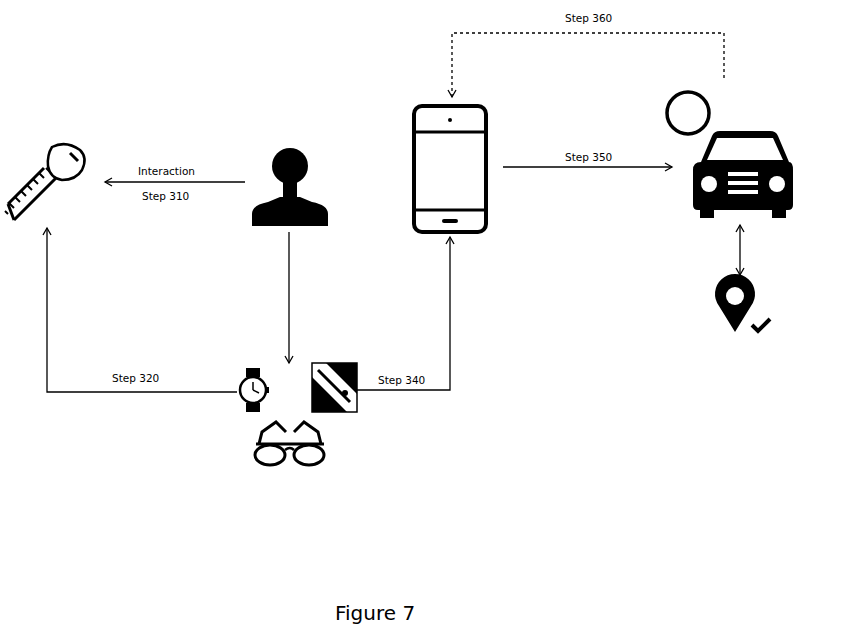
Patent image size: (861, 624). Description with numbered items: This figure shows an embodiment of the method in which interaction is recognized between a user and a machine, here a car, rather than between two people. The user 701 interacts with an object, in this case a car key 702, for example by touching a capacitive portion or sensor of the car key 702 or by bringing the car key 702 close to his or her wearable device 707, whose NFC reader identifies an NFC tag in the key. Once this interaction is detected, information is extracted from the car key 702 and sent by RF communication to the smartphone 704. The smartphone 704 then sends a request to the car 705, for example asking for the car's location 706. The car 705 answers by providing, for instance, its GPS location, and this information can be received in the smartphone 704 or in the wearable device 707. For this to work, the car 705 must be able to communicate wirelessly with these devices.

The user 701 is at (298, 128).
The car key 702 is at (73, 130).
The smartphone 704 is at (474, 243).
The car 705 is at (772, 120).
The car's location 706 is at (725, 337).
The wearable device 707 is at (290, 477).